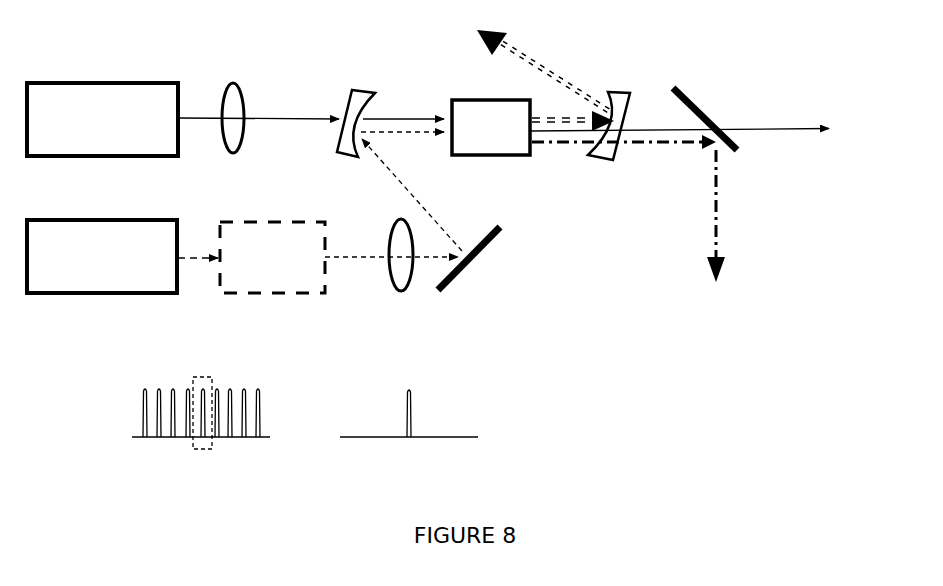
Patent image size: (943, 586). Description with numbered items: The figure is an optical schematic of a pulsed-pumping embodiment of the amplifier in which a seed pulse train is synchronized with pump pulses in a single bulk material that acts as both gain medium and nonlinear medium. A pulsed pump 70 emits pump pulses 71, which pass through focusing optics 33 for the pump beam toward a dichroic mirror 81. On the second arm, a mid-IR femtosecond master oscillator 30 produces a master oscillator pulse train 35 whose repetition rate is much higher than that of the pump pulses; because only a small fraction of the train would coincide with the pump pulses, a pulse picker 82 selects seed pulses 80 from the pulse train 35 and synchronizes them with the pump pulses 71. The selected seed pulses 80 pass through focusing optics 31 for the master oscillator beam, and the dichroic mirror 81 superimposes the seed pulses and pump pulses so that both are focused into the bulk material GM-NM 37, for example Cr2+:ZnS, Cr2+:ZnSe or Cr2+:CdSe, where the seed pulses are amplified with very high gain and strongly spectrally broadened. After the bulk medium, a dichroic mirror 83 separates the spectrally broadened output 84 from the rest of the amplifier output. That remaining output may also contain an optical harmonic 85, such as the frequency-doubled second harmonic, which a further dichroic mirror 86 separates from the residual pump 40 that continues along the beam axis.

The pulsed pump 70 is at (106, 96).
The focusing optics for the pump beam 33 is at (233, 96).
The pump pulses 71 is at (291, 112).
The dichroic mirror 81 is at (370, 108).
The bulk material GM-NM 37 is at (484, 140).
The spectrally broadened output 84 is at (540, 44).
The dichroic mirror 83 is at (617, 84).
The dichroic mirror 86 is at (704, 104).
The residual pump 40 is at (780, 125).
The optical harmonic 85 is at (720, 223).
The master oscillator 30 is at (115, 278).
The master oscillator pulse train 35 is at (192, 264).
The pulse picker 82 is at (258, 278).
The seed pulses 80 is at (357, 264).
The focusing optics for MO beam 31 is at (400, 268).